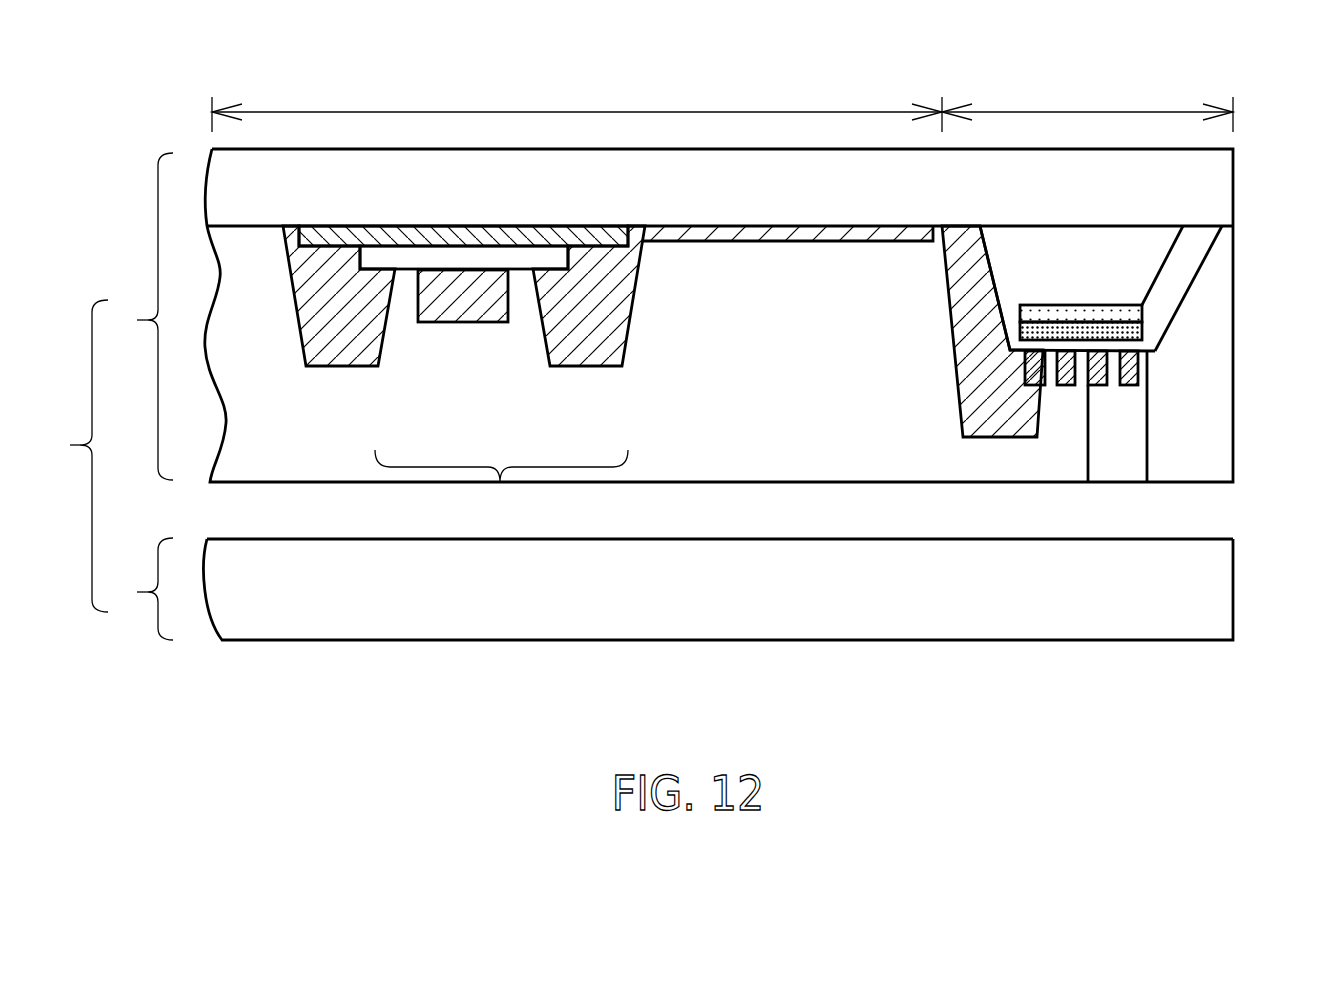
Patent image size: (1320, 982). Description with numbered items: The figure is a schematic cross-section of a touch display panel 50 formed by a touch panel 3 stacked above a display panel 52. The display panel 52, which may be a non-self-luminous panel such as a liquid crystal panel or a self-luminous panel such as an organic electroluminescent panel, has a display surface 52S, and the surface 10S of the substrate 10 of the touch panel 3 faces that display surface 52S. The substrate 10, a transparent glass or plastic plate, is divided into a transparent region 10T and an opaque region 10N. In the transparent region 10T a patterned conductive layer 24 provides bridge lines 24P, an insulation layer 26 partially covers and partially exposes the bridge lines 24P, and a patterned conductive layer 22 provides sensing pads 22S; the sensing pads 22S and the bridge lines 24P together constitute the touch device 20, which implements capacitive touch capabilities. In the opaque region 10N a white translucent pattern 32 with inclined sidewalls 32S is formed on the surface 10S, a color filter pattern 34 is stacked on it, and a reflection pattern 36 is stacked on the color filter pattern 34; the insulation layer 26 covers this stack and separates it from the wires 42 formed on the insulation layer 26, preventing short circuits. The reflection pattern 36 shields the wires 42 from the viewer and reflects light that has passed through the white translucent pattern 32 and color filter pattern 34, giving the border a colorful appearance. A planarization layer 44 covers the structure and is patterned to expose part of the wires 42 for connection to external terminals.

The transparent region 10T is at (577, 101).
The opaque region 10N is at (1087, 101).
The substrate 10 is at (773, 202).
The surface 10S is at (248, 230).
The planarization layer 44 is at (773, 376).
The patterned conductive layer 22 is at (464, 296).
The sensing pads 22S is at (588, 343).
The patterned conductive layer 24 is at (463, 274).
The bridge lines 24P is at (416, 234).
The insulation layer 26 is at (500, 257).
The white translucent pattern 32 is at (1068, 277).
The inclined sidewalls 32S is at (1000, 265).
The color filter pattern 34 is at (1143, 310).
The reflection pattern 36 is at (1142, 330).
The wires 42 is at (1128, 375).
The touch device 20 is at (501, 486).
The touch panel 3 is at (141, 316).
The touch display panel 50 is at (69, 456).
The display panel 52 is at (666, 589).
The display surface 52S is at (695, 538).